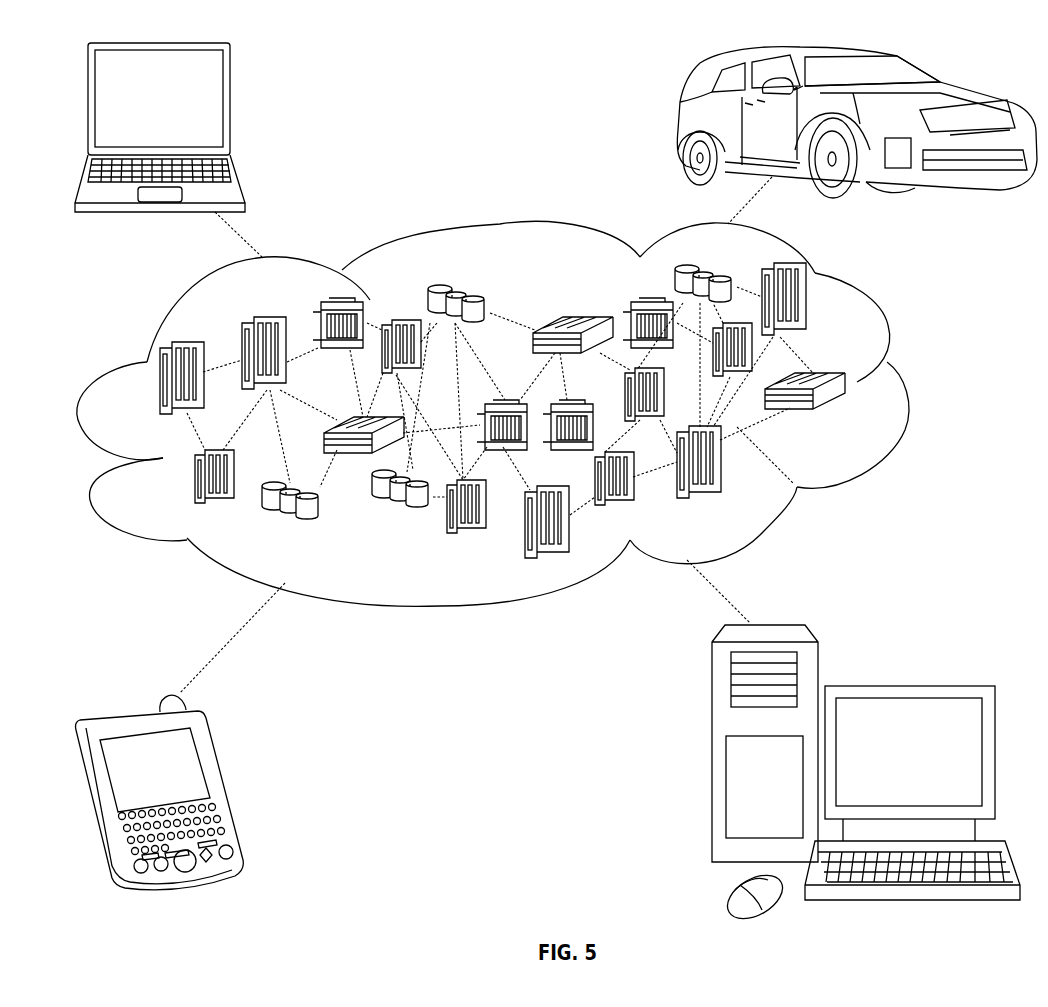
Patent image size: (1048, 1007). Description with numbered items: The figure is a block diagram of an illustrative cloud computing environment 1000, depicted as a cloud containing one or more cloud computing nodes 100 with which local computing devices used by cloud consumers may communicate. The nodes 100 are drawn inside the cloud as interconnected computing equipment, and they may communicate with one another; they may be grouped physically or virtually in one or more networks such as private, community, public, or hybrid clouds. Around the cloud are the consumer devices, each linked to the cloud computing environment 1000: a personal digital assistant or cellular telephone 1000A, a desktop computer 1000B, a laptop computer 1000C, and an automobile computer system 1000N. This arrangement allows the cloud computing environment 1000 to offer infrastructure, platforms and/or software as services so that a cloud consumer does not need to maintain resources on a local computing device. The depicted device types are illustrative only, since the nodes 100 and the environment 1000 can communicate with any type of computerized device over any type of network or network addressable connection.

The laptop computer 1000C is at (232, 108).
The automobile computer system 1000N is at (678, 128).
The cloud computing environment 1000 is at (906, 392).
The cloud computing nodes 100 is at (848, 419).
The personal digital assistant (PDA) or cellular telephone 1000A is at (222, 786).
The desktop computer 1000B is at (906, 686).